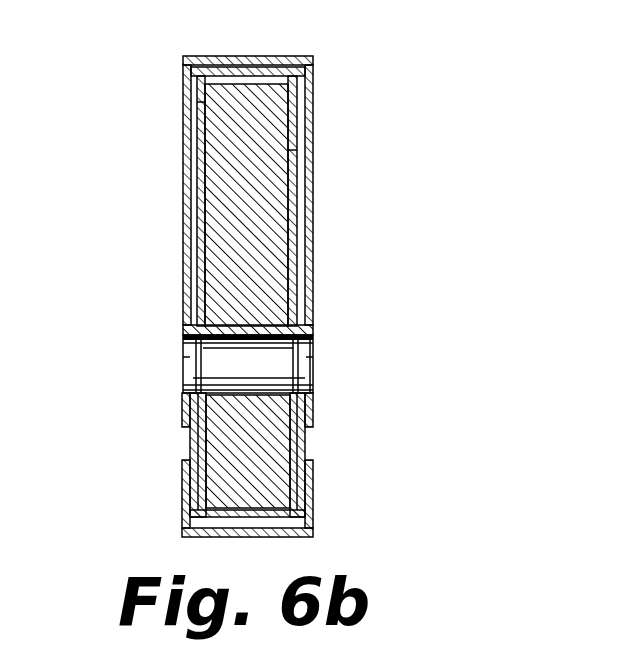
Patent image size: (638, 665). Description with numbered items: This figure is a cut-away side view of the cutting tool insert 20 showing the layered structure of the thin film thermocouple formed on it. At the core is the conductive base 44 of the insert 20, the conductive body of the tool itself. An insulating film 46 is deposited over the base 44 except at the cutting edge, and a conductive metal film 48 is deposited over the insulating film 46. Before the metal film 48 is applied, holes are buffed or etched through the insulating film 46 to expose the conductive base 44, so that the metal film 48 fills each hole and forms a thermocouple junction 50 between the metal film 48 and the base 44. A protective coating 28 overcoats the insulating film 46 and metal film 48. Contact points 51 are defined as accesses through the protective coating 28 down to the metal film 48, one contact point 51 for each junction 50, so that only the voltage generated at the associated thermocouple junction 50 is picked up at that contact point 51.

The cutting insert 20 is at (200, 36).
The protective coating 28 is at (298, 57).
The conductive base 44 is at (290, 262).
The insulating film 46 is at (298, 207).
The conductive metal film 48 is at (183, 120).
The thermocouple junction 50 is at (247, 129).
The contact point 51 is at (183, 447).